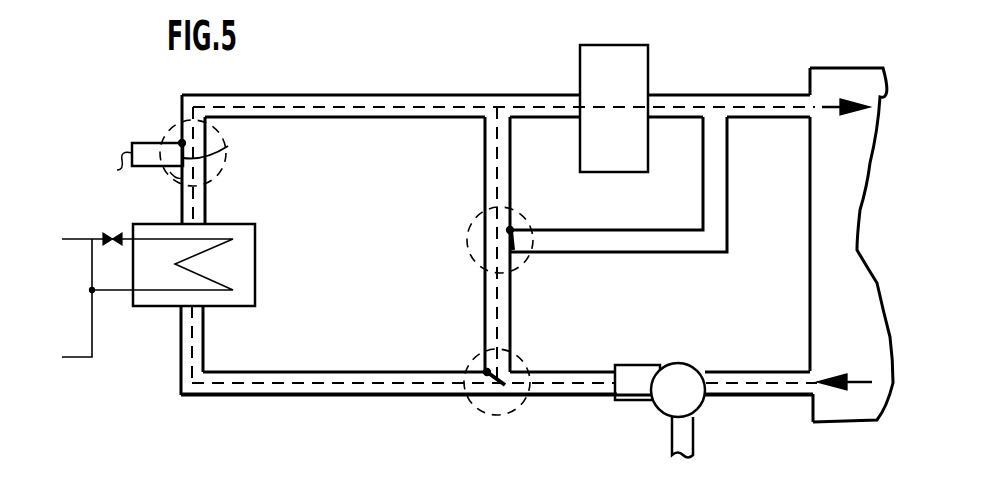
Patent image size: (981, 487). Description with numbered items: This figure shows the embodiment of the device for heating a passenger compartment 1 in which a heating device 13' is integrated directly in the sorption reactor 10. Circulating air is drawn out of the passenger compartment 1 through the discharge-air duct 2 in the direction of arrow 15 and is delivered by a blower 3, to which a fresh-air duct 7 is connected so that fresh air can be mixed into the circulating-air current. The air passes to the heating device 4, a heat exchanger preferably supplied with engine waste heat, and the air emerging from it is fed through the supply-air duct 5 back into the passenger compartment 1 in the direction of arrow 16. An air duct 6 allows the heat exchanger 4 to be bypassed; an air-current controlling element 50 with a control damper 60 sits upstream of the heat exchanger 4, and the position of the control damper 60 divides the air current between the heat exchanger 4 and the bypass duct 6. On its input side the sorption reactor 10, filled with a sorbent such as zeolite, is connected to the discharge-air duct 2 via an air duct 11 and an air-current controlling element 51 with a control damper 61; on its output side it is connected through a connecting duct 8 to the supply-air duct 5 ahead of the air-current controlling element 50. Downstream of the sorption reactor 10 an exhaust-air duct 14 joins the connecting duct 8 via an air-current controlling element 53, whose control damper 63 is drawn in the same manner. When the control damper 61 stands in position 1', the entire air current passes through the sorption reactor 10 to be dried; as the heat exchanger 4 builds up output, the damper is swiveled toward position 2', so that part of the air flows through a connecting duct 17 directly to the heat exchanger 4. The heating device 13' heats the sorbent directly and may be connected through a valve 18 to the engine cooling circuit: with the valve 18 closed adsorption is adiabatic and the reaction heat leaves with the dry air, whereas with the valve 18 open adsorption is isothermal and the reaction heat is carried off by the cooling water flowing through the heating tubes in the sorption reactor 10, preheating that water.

The passenger compartment 1 is at (838, 245).
The discharge-air duct 2 is at (499, 358).
The blower 3 is at (690, 373).
The heating device 4 is at (644, 81).
The supply-air duct 5 is at (771, 95).
The air duct 6 is at (653, 254).
The fresh-air duct 7 is at (694, 446).
The connecting duct 8 is at (372, 94).
The sorption reactor 10 is at (256, 255).
The air duct 11 is at (205, 343).
The heating device 13' is at (114, 299).
The exhaust-air duct 14 is at (146, 172).
The arrow 15 is at (852, 346).
The arrow 16 is at (826, 112).
The connecting duct 17 is at (485, 183).
The valve 18 is at (107, 231).
The air-current controlling element 50 is at (514, 226).
The air-current controlling element 51 is at (521, 420).
The air-current controlling element 53 is at (220, 186).
The control damper 60 is at (515, 253).
The control damper 61 is at (490, 413).
The control damper 63 is at (210, 158).
The position 1' is at (530, 355).
The position 2' is at (470, 413).